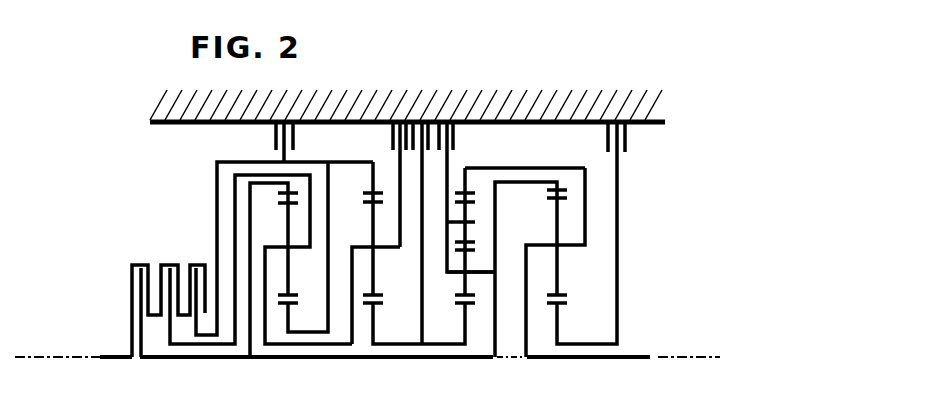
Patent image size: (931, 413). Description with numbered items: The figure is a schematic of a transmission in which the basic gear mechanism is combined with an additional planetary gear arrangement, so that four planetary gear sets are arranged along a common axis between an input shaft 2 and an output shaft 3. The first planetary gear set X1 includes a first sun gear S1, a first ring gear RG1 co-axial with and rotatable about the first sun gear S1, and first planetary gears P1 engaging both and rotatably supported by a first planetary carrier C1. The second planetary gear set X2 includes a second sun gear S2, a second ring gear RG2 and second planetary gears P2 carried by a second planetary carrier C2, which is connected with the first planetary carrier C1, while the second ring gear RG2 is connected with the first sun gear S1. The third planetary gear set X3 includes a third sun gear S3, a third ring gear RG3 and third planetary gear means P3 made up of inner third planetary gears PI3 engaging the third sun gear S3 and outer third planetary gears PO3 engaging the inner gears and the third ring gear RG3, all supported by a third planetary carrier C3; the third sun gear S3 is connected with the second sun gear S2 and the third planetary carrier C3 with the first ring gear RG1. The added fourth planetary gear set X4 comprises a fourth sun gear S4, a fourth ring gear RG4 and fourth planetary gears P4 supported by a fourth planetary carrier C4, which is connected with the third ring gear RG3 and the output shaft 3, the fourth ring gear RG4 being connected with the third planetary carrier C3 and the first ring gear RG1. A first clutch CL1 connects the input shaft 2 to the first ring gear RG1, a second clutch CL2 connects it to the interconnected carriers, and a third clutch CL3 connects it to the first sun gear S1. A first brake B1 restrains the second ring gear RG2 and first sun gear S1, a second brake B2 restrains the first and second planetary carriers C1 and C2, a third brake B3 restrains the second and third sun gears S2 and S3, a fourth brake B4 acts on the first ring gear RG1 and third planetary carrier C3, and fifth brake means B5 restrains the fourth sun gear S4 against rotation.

The input shaft 2 is at (102, 362).
The output shaft 3 is at (632, 362).
The first clutch CL1 is at (132, 272).
The second clutch CL2 is at (161, 262).
The third clutch CL3 is at (205, 266).
The first brake B1 is at (283, 128).
The second brake B2 is at (395, 128).
The third brake B3 is at (415, 128).
The fourth brake B4 is at (442, 128).
The fifth brake means B5 is at (620, 130).
The first ring gear RG1 is at (288, 192).
The second ring gear RG2 is at (373, 172).
The third ring gear RG3 is at (467, 185).
The fourth ring gear RG4 is at (557, 185).
The first planetary carrier C1 is at (288, 286).
The second planetary carrier C2 is at (375, 284).
The third planetary carrier C3 is at (456, 276).
The fourth planetary carrier C4 is at (566, 243).
The first planetary gears P1 is at (298, 298).
The second planetary gears P2 is at (386, 296).
The third planetary gear means P3 is at (470, 262).
The outer third planetary gears PO3 is at (470, 218).
The inner third planetary gears PI3 is at (503, 360).
The fourth planetary gears P4 is at (559, 290).
The first sun gear S1 is at (289, 312).
The second sun gear S2 is at (376, 333).
The third sun gear S3 is at (460, 310).
The fourth sun gear S4 is at (559, 335).
The first planetary gear set X1 is at (278, 339).
The second planetary gear set X2 is at (364, 339).
The third planetary gear set X3 is at (471, 326).
The fourth planetary gear set X4 is at (548, 339).